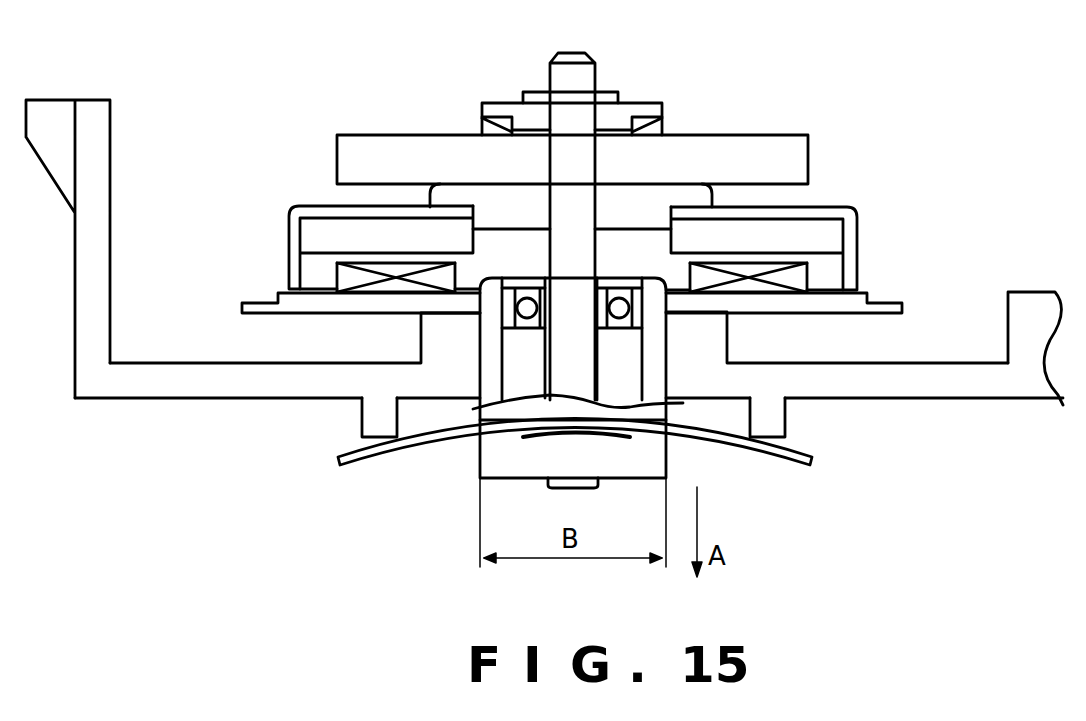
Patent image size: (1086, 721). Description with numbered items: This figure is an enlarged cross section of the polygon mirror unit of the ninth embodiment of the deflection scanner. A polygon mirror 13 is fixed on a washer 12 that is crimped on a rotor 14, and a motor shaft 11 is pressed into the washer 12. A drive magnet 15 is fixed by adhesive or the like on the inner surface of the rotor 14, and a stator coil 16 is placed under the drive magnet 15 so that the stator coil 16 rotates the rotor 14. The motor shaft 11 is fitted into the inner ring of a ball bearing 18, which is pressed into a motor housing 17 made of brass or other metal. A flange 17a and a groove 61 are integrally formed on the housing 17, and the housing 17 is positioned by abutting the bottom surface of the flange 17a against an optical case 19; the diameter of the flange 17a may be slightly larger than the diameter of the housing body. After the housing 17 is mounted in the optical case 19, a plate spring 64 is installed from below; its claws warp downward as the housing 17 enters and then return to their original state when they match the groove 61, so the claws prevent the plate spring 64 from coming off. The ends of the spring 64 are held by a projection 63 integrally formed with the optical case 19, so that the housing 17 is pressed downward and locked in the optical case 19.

The motor shaft 11 is at (582, 82).
The washer 12 is at (702, 203).
The polygon mirror 13 is at (787, 163).
The rotor 14 is at (848, 233).
The drive magnet 15 is at (327, 233).
The stator coil 16 is at (792, 280).
The motor housing 17 is at (418, 340).
The flange 17a is at (710, 347).
The ball bearing 18 is at (522, 298).
The optical case 19 is at (997, 382).
The groove 61 is at (666, 424).
The projection 63 is at (373, 418).
The plate spring 64 is at (413, 447).